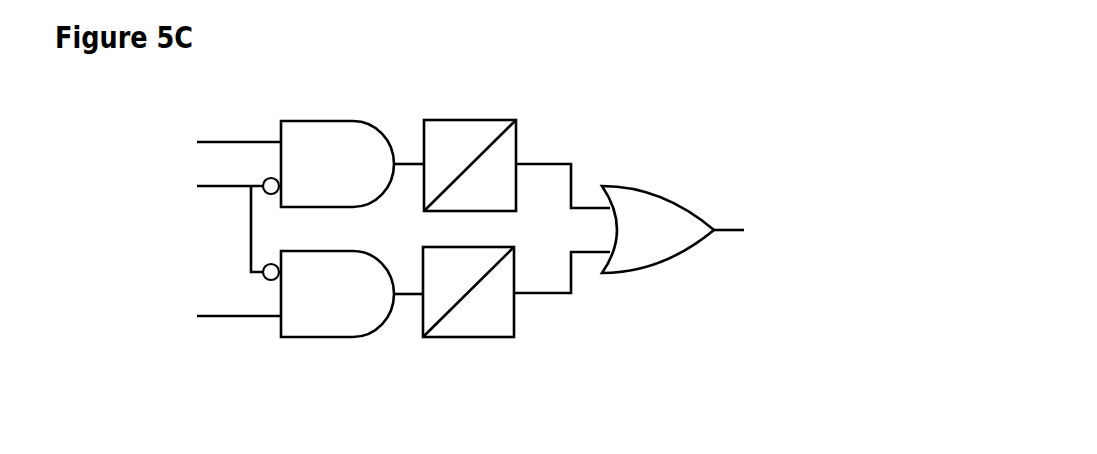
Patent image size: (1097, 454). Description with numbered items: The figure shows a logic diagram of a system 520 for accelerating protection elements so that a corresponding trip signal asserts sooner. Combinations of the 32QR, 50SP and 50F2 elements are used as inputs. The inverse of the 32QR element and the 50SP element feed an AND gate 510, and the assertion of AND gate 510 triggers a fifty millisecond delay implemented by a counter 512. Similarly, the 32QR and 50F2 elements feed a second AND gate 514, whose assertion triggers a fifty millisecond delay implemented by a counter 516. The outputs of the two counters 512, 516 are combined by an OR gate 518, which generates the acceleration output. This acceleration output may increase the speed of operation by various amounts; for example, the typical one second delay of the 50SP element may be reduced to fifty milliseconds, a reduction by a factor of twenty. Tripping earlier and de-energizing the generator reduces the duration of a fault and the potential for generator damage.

The AND gate 510 is at (323, 121).
The counter 512 is at (487, 120).
The AND gate 514 is at (323, 337).
The counter 516 is at (482, 337).
The OR gate 518 is at (672, 265).
The system to accelerate protection elements 520 is at (653, 86).